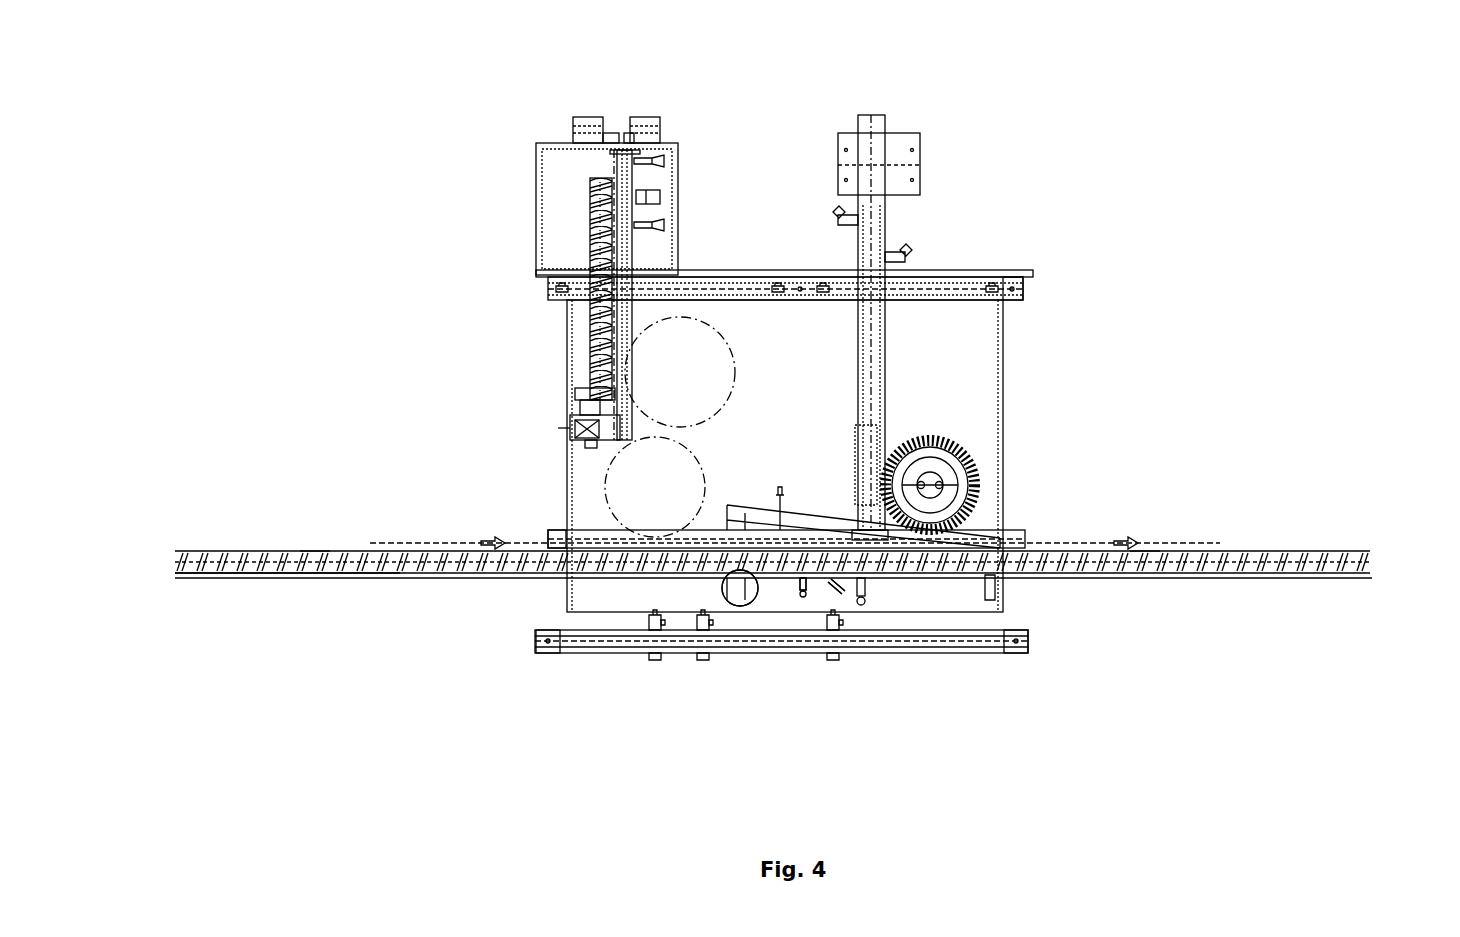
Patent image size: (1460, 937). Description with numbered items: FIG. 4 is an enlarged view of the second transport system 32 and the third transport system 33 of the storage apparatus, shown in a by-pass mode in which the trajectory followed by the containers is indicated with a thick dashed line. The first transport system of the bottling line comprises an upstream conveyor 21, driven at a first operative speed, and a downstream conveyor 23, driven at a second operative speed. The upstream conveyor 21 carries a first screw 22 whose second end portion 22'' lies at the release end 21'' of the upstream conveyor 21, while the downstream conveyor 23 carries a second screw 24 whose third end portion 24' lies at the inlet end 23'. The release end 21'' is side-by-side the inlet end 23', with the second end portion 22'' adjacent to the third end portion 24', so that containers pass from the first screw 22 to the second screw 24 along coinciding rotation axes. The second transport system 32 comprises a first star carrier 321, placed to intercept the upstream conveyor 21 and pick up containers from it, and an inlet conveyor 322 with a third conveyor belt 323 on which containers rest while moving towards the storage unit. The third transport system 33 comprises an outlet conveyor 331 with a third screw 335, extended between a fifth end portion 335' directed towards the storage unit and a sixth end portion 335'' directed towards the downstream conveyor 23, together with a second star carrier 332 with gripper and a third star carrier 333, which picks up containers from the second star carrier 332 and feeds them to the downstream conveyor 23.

The upstream conveyor 21 is at (774, 631).
The first screw 22 is at (1151, 654).
The downstream conveyor 23 is at (287, 647).
The second screw 24 is at (311, 634).
The release end 21'' is at (863, 671).
The second end portion 22'' is at (863, 618).
The inlet end 23' is at (698, 642).
The third end portion 24' is at (736, 661).
The second transport system 32 is at (1113, 299).
The first star carrier 321 is at (950, 455).
The inlet conveyor 322 is at (915, 229).
The third conveyor belt 323 is at (880, 305).
The third transport system 33 is at (418, 320).
The outlet conveyor 331 is at (570, 135).
The second star carrier 332 is at (688, 318).
The third star carrier 333 is at (592, 482).
The third screw 335 is at (529, 295).
The fifth end portion 335' is at (506, 263).
The sixth end portion 335'' is at (526, 405).